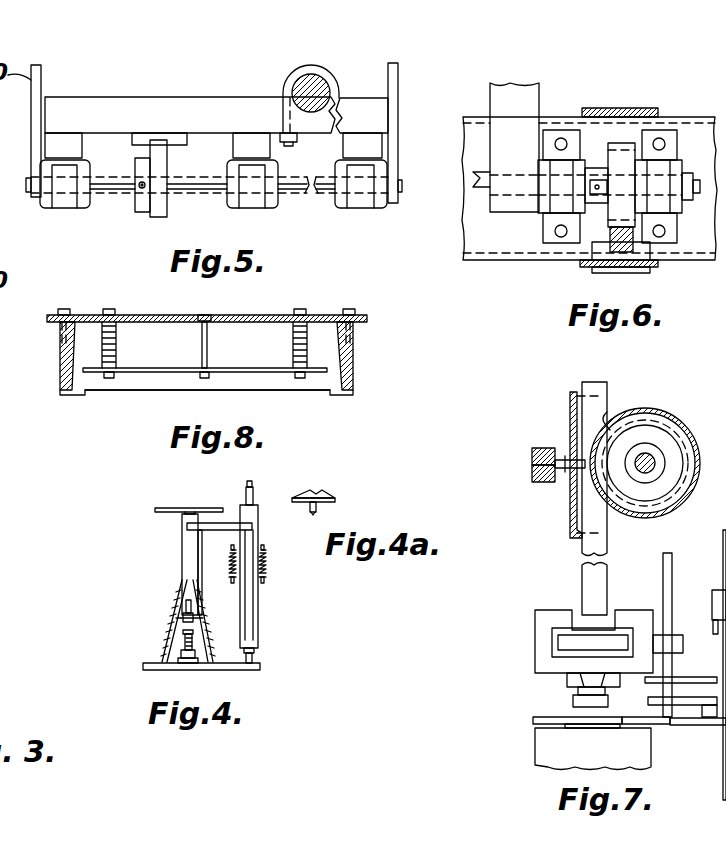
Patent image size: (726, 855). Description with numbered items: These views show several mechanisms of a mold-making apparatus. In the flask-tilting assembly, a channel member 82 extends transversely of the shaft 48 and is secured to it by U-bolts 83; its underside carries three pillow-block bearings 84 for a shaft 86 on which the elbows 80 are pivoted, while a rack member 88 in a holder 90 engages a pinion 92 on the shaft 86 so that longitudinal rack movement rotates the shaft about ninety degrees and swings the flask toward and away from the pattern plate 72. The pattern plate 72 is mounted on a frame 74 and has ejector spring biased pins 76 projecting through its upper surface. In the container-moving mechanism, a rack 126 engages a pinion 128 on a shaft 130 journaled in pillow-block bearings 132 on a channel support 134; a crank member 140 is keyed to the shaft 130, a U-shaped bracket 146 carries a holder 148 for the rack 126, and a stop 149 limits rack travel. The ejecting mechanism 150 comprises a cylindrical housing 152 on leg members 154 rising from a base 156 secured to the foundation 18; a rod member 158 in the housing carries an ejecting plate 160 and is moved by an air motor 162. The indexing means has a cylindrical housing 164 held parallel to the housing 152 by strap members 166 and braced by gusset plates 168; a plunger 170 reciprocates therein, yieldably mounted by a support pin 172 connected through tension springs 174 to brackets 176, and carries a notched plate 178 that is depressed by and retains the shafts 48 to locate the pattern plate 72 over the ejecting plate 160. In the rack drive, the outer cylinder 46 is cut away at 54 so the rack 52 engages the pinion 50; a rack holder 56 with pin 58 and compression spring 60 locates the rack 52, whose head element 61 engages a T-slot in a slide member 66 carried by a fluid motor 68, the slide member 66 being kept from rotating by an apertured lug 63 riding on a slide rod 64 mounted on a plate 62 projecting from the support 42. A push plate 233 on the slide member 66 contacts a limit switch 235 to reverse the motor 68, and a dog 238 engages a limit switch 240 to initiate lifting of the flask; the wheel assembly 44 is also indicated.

In FIG. 4, the foundation 18 is at (257, 665).
In FIG. 7, the support 42 is at (720, 748).
In FIG. 7, the wheel assembly 44 is at (672, 418).
In FIG. 7, the outer cylinder 46 is at (648, 410).
In FIG. 5, the shaft 48 is at (292, 83).
In FIG. 7, the shaft 48 is at (655, 460).
In FIG. 7, the pinion 50 is at (665, 483).
In FIG. 7, the rack 52 is at (607, 538).
In FIG. 7, the cut-away 54 is at (610, 415).
In FIG. 7, the rack holder 56 is at (570, 405).
In FIG. 7, the pin 58 is at (530, 468).
In FIG. 7, the compression spring 60 is at (533, 450).
In FIG. 7, the head element 61 is at (560, 640).
In FIG. 7, the plate 62 is at (688, 715).
In FIG. 7, the apertured lug 63 is at (676, 640).
In FIG. 7, the slide rod 64 is at (672, 572).
In FIG. 7, the slide member 66 is at (537, 650).
In FIG. 7, the fluid motor 68 is at (645, 753).
In FIG. 8, the pattern plate 72 is at (255, 316).
In FIG. 8, the frame 74 is at (58, 350).
In FIG. 8, the spring biased pins 76 is at (207, 318).
In FIG. 5, the elbows 80 is at (398, 76).
In FIG. 5, the channel member 82 is at (128, 68).
In FIG. 5, the U-bolts 83 is at (328, 74).
In FIG. 5, the pillow-block bearings 84 is at (63, 205).
In FIG. 5, the shaft 86 is at (110, 190).
In FIG. 5, the rack member 88 is at (170, 148).
In FIG. 5, the holder 90 is at (176, 138).
In FIG. 5, the pinion 92 is at (158, 215).
In FIG. 6, the rack 126 is at (615, 225).
In FIG. 6, the pinion 128 is at (620, 150).
In FIG. 6, the shaft 130 is at (693, 188).
In FIG. 6, the pillow-block bearings 132 is at (552, 135).
In FIG. 6, the channel support 134 is at (503, 240).
In FIG. 6, the crank member 140 is at (533, 95).
In FIG. 6, the U-shaped bracket 146 is at (640, 98).
In FIG. 6, the holder 148 is at (640, 242).
In FIG. 6, the stop 149 is at (608, 265).
In FIG. 4, the ejecting mechanism 150 is at (206, 500).
In FIG. 4, the cylindrical housing 152 is at (178, 555).
In FIG. 4, the leg members 154 is at (170, 630).
In FIG. 4, the base 156 is at (165, 648).
In FIG. 4, the rod member 158 is at (185, 620).
In FIG. 4, the ejecting plate 160 is at (157, 511).
In FIG. 4, the air motor 162 is at (190, 637).
In FIG. 4, the cylindrical housing 164 is at (259, 537).
In FIG. 4, the strap members 166 is at (222, 532).
In FIG. 4, the gusset plates 168 is at (254, 615).
In FIG. 4, the plunger 170 is at (256, 504).
In FIG. 4A, the plunger 170 is at (340, 499).
In FIG. 4, the support pin 172 is at (266, 580).
In FIG. 4, the tension springs 174 is at (266, 563).
In FIG. 4, the brackets 176 is at (230, 562).
In FIG. 4, the notched plate 178 is at (250, 483).
In FIG. 4A, the notched plate 178 is at (325, 500).
In FIG. 7, the push plate 233 is at (650, 677).
In FIG. 7, the limit switch 235 is at (724, 580).
In FIG. 7, the dog 238 is at (665, 690).
In FIG. 7, the limit switch 240 is at (705, 722).